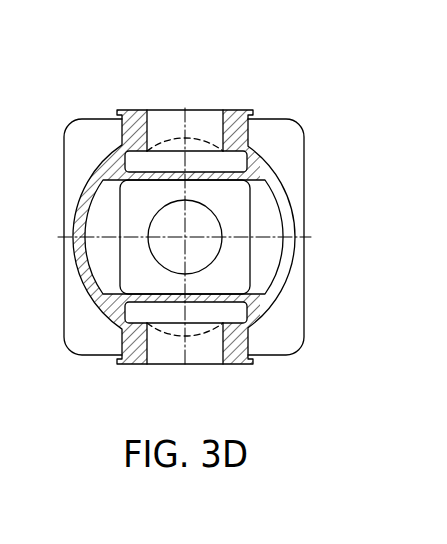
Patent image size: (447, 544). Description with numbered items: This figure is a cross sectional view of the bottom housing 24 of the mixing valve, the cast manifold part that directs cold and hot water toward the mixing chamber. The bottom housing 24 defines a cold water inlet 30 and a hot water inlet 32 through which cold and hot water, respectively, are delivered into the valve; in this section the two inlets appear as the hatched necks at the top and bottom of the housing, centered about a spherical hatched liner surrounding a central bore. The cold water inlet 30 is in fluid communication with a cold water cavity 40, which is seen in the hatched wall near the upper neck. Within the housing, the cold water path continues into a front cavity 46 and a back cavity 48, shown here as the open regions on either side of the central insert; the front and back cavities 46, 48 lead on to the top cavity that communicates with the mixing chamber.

The bottom housing 24 is at (274, 118).
The cold water inlet 30 is at (206, 110).
The hot water inlet 32 is at (195, 365).
The cold water cavity 40 is at (248, 157).
The front cavity 46 is at (265, 222).
The back cavity 48 is at (110, 211).